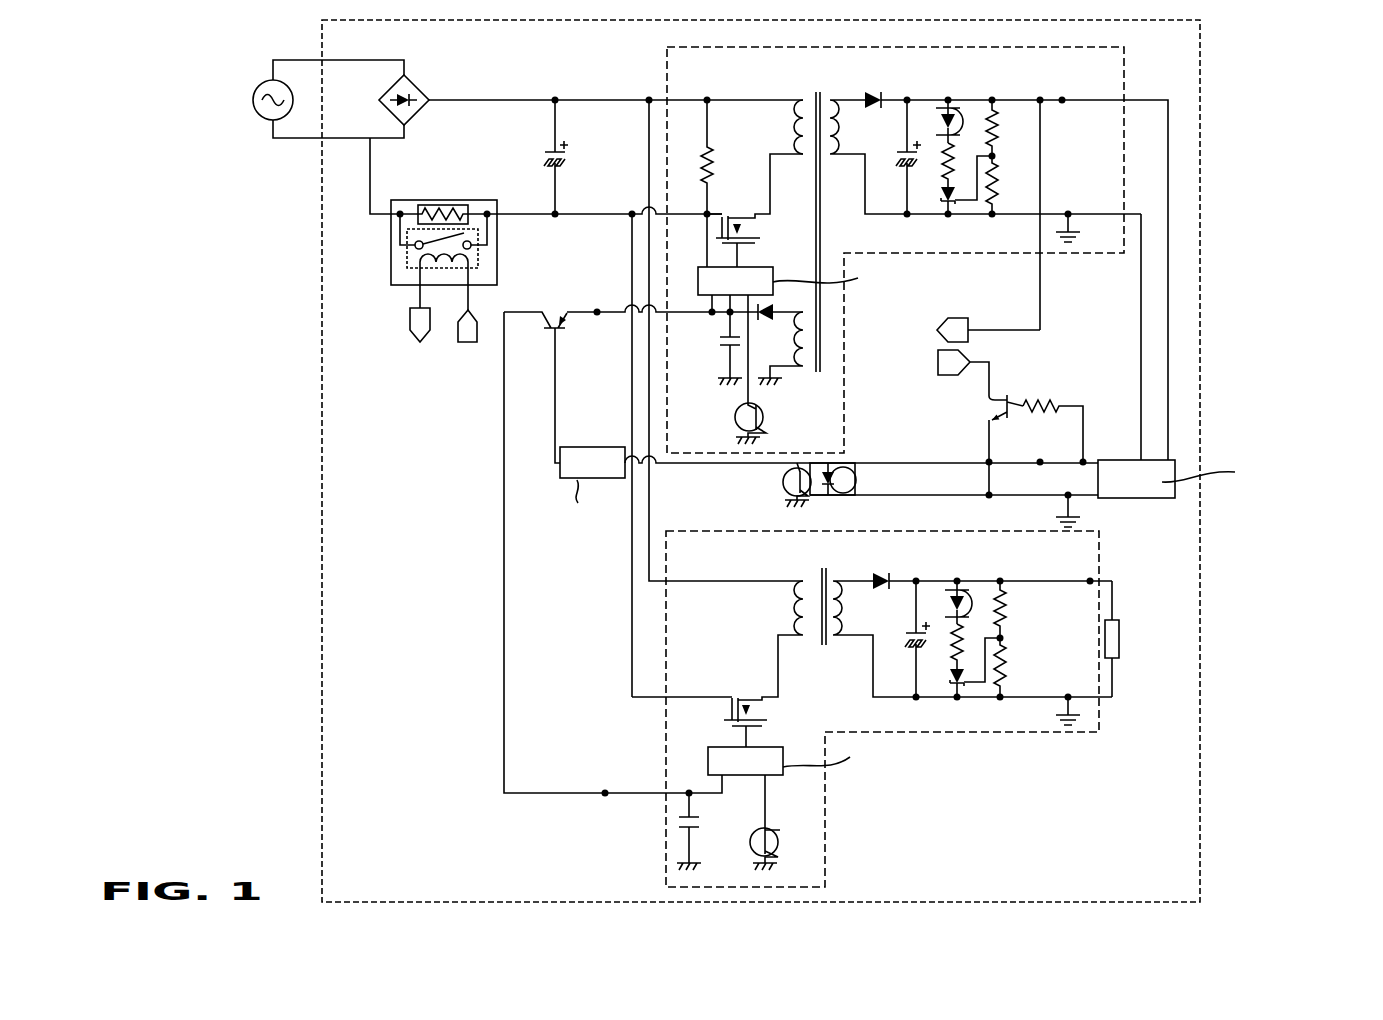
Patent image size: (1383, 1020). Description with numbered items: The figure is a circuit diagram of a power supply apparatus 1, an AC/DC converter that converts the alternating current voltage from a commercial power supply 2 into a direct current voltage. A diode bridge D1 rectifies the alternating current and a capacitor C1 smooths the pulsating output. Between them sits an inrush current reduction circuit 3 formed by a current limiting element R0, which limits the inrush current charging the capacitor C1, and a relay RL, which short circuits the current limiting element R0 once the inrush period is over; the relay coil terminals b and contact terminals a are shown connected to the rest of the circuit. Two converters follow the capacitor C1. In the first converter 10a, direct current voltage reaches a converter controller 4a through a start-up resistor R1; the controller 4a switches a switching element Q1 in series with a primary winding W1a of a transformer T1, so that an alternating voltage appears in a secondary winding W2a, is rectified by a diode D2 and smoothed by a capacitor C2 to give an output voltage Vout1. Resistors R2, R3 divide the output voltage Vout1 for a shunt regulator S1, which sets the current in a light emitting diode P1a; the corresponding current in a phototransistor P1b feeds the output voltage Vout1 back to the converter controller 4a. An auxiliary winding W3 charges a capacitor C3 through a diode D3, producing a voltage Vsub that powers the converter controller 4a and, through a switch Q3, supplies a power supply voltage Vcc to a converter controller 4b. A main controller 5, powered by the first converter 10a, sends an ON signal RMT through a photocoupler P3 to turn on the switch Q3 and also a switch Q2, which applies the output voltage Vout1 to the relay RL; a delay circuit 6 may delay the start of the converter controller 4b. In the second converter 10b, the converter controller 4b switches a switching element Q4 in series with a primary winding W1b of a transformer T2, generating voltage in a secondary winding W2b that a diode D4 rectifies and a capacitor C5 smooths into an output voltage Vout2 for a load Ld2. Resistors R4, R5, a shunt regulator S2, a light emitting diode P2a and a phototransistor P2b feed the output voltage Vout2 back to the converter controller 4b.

The power supply apparatus 1 is at (1202, 92).
The commercial power supply 2 is at (265, 84).
The inrush current reduction circuit 3 is at (426, 235).
The relay RL is at (407, 258).
The current limiting element R0 is at (449, 204).
The diode bridge D1 is at (411, 94).
The capacitor C1 is at (570, 157).
The voltage Vsub is at (595, 308).
The switch Q3 is at (549, 332).
The delay circuit 6 is at (584, 499).
The power supply voltage Vcc is at (604, 789).
The start-up resistor R1 is at (722, 157).
The switching element Q1 is at (755, 210).
The converter controller 4a is at (842, 287).
The capacitor C3 is at (715, 340).
The diode D3 is at (778, 328).
The auxiliary winding W3 is at (805, 368).
The phototransistor P1b is at (736, 420).
The transformer T1 is at (816, 93).
The primary winding W1a is at (800, 99).
The secondary winding W2a is at (833, 100).
The diode D2 is at (883, 93).
The capacitor C2 is at (894, 157).
The light emitting diode P1a is at (950, 111).
The shunt regulator S1 is at (953, 178).
The resistor R2 is at (1007, 128).
The resistor R3 is at (1007, 185).
The output voltage Vout1 is at (1078, 86).
The first converter 10a is at (1124, 78).
The relay contact terminal a is at (749, 327).
The relay coil terminal b is at (708, 354).
The switch Q2 is at (1005, 396).
The ON signal RMT is at (1042, 458).
The main controller 5 is at (1232, 483).
The photocoupler P3 is at (785, 485).
The second converter 10b is at (1100, 562).
The primary winding W1b is at (800, 582).
The transformer T2 is at (822, 569).
The secondary winding W2b is at (838, 582).
The diode D4 is at (886, 577).
The capacitor C5 is at (904, 639).
The light emitting diode P2a is at (960, 593).
The shunt regulator S2 is at (961, 660).
The resistor R4 is at (1016, 609).
The resistor R5 is at (1016, 667).
The output voltage Vout2 is at (1088, 578).
The load Ld2 is at (1120, 641).
The switching element Q4 is at (741, 698).
The converter controller 4b is at (845, 771).
The phototransistor P2b is at (746, 822).